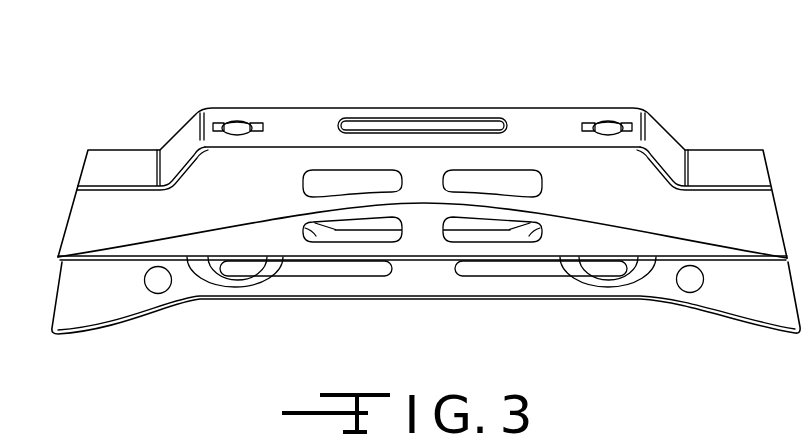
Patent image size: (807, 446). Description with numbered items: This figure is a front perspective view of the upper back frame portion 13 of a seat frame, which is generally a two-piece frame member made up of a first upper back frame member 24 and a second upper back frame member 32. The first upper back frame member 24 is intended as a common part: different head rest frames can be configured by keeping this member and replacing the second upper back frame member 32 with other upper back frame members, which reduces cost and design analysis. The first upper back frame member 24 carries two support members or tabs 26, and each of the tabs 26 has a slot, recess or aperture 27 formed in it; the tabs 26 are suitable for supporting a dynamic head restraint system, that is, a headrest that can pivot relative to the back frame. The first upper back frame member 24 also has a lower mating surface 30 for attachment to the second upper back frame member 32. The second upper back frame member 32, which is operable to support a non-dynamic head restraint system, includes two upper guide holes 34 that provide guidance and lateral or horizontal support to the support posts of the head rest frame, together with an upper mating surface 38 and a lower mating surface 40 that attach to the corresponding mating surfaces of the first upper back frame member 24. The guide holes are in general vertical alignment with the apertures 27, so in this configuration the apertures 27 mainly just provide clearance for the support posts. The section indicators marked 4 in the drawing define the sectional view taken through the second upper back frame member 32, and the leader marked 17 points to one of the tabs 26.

The upper back frame portion 13 is at (698, 122).
The first upper back frame member 24 is at (59, 296).
The tabs 26 is at (482, 108).
The apertures 27 is at (624, 266).
The grommet clip 17 is at (227, 265).
The lower mating surface 30 is at (400, 268).
The second upper back frame member 32 is at (80, 168).
The upper guide holes 34 is at (236, 120).
The upper mating surface 38 is at (303, 122).
The lower mating surface 40 is at (453, 259).
The section line 4- 4 is at (222, 85).